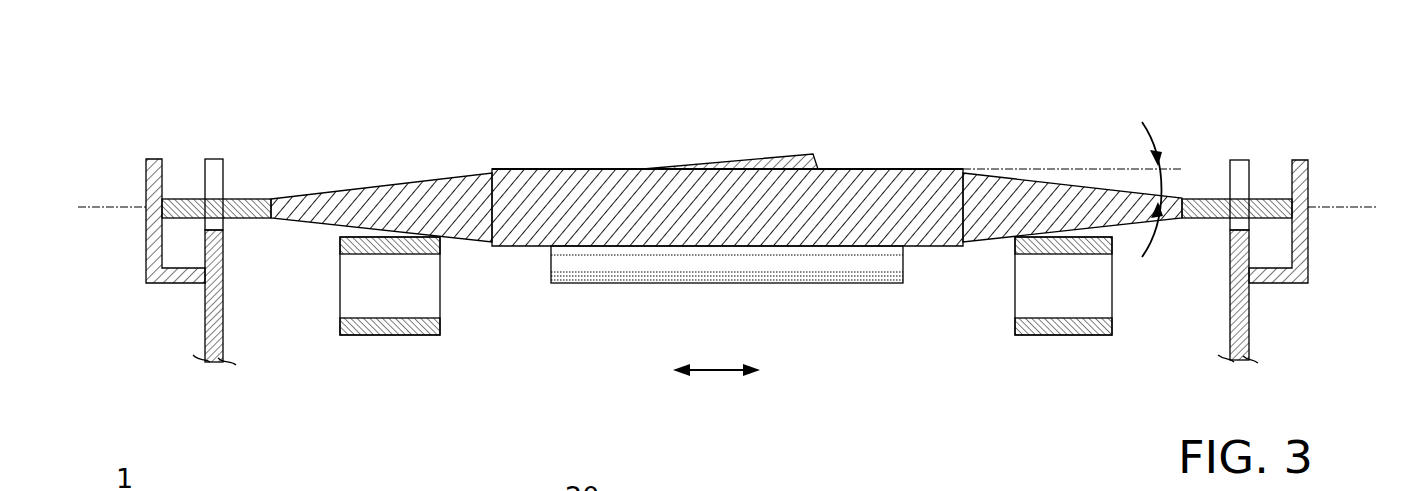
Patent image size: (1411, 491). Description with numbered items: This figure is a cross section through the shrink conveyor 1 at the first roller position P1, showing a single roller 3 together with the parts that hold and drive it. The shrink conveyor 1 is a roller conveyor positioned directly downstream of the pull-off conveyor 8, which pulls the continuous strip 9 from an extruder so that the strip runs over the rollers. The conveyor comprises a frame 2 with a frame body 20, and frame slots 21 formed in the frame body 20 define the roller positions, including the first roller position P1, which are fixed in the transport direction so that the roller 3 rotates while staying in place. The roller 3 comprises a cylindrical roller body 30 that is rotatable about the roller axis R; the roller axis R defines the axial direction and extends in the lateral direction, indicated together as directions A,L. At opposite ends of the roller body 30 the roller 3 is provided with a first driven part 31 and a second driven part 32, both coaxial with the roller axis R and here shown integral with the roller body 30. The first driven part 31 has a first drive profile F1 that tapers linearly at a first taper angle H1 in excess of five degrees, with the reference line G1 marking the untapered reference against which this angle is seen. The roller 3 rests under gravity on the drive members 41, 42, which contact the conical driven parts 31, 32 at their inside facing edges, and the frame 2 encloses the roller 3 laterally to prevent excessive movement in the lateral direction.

The shrink conveyor 1 is at (160, 121).
The frame 2 is at (205, 308).
The frame body 20 is at (205, 243).
The frame slot 21 is at (216, 168).
The roller 3 is at (538, 172).
The roller body 30 is at (588, 172).
The first driven part 31 is at (421, 186).
The second driven part 32 is at (1044, 190).
The continuous strip 9 is at (777, 164).
The pull-off conveyor 8 is at (675, 265).
The drive member 41 is at (420, 297).
The drive member 42 is at (1026, 302).
The first roller position P1 is at (94, 207).
The roller axis R is at (1351, 207).
The first drive profile F1 is at (354, 193).
The reference line G1 is at (1102, 175).
The first taper angle H1 is at (1162, 182).
The axial direction and lateral direction A,L is at (716, 389).